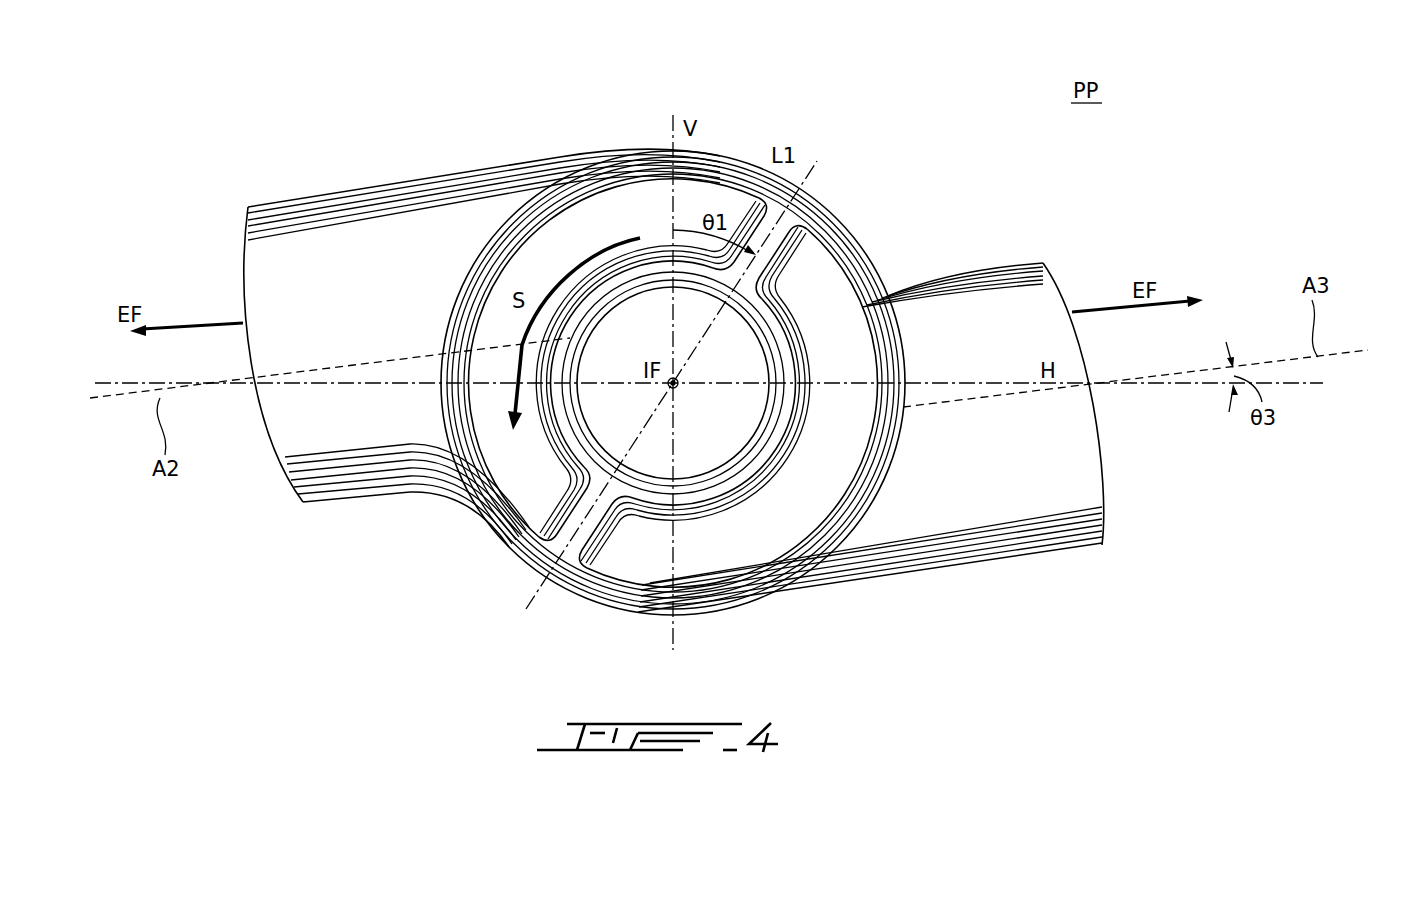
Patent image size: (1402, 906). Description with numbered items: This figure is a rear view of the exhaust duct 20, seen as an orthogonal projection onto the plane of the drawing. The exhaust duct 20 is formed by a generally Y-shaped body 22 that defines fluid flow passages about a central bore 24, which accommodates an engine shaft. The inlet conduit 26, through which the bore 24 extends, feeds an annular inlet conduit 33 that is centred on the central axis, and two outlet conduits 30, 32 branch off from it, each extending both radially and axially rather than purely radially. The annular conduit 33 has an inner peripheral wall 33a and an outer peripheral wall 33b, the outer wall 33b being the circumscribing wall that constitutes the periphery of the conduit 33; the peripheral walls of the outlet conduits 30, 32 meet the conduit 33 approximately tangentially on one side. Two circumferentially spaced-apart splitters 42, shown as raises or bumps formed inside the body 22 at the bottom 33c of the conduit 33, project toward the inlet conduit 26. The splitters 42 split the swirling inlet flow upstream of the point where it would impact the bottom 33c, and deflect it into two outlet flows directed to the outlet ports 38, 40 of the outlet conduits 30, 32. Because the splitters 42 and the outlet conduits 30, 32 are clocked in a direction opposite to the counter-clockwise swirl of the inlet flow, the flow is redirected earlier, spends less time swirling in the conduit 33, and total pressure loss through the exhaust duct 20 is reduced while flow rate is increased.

The exhaust duct 20 is at (268, 509).
The body 22 is at (390, 495).
The central bore 24 is at (603, 337).
The inlet conduit 26 is at (800, 527).
The outlet conduit 30 is at (348, 207).
The outlet conduit 32 is at (952, 283).
The annular inlet conduit 33 is at (540, 490).
The inner peripheral wall 33a is at (620, 295).
The outer peripheral wall 33b is at (786, 232).
The bottom of the conduit 33c is at (853, 326).
The outlet port 38 is at (247, 282).
The outlet port 40 is at (1072, 300).
The splitter 42 is at (752, 232).